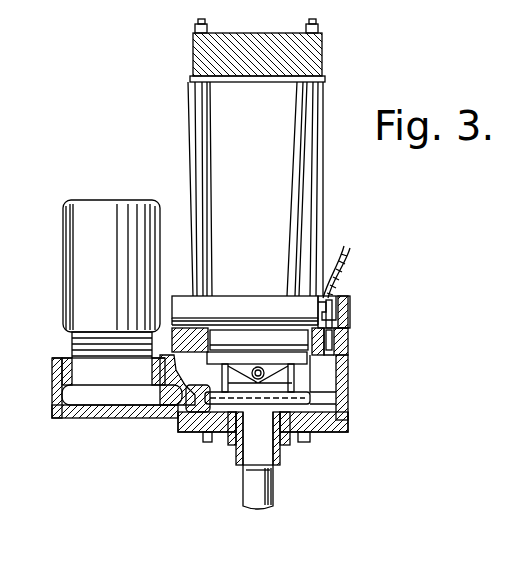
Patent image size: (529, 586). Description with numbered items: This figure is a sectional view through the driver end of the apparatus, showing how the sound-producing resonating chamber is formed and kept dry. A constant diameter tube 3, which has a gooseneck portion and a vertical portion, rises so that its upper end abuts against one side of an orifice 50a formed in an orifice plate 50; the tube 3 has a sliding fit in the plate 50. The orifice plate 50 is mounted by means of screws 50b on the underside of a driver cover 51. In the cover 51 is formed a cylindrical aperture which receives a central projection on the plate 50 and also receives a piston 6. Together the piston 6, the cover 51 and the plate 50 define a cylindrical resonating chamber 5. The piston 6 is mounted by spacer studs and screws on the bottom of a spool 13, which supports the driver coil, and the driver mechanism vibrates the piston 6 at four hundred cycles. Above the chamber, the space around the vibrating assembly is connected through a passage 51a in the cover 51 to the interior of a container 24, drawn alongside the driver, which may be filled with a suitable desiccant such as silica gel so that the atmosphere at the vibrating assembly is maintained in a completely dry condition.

The constant diameter tube 3 is at (278, 489).
The cylindrical resonating chamber 5 is at (226, 416).
The piston 6 is at (350, 402).
The spool 13 is at (352, 358).
The container 24 is at (82, 279).
The orifice plate 50 is at (190, 436).
The orifice 50a is at (248, 468).
The screws 50b is at (312, 440).
The driver cover 51 is at (350, 416).
The passage 51a is at (150, 408).